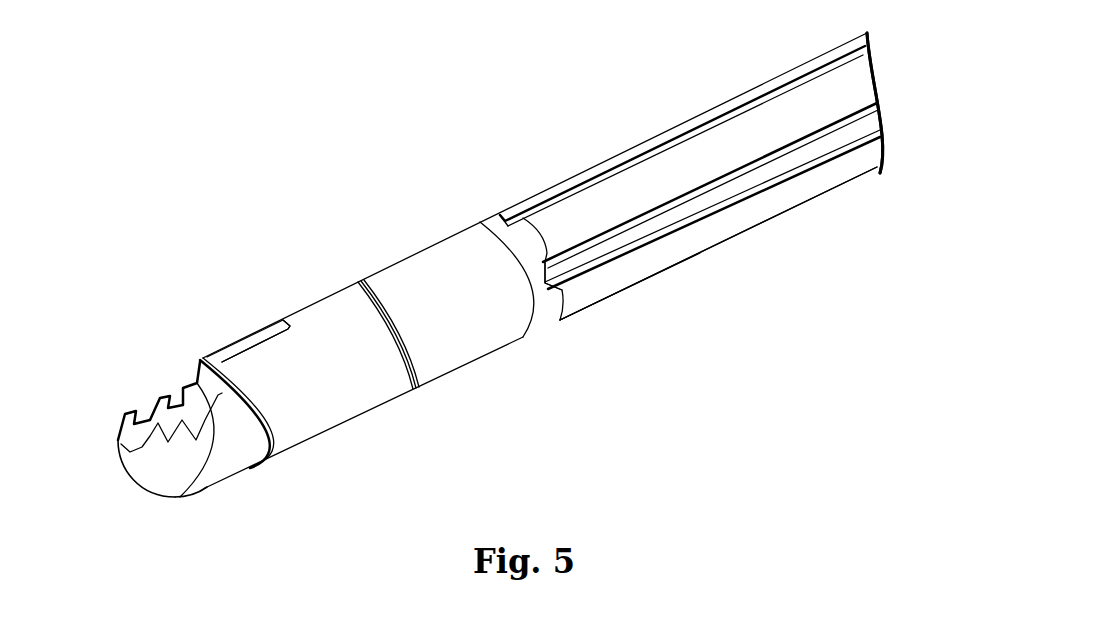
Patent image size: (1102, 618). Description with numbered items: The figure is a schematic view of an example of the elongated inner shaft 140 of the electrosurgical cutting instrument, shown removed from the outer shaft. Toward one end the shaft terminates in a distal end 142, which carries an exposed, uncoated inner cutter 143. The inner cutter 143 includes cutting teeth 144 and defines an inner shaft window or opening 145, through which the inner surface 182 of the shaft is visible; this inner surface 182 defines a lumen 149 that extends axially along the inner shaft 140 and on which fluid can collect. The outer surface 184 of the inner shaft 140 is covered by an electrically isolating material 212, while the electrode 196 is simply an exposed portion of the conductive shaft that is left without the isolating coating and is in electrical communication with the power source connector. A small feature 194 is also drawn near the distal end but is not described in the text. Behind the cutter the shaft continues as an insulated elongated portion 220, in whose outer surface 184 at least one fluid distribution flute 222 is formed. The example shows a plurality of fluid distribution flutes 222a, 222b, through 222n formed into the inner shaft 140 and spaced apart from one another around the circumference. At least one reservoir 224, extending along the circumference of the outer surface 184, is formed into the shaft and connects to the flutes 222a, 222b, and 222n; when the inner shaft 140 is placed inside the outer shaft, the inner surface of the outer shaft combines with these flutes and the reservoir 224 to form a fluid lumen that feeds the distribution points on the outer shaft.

The inner shaft 140 is at (216, 141).
The distal end 142 is at (100, 405).
The inner cutter 143 is at (220, 492).
The cutting teeth 144 is at (128, 420).
The inner shaft window 145 is at (155, 388).
The lumen 149 is at (207, 400).
The inner surface 182 is at (193, 383).
The outer surface 184 is at (290, 457).
The slot near distal tip 194 is at (222, 357).
The electrode 196 is at (157, 487).
The electrically isolating material 212 is at (127, 477).
The insulated elongated portion 220 is at (595, 340).
The fluid distribution flute 222 is at (666, 221).
The fluid distribution flute 222a is at (628, 237).
The fluid distribution flute 222b is at (612, 293).
The fluid distribution flute 222n is at (637, 153).
The reservoir 224 is at (477, 208).